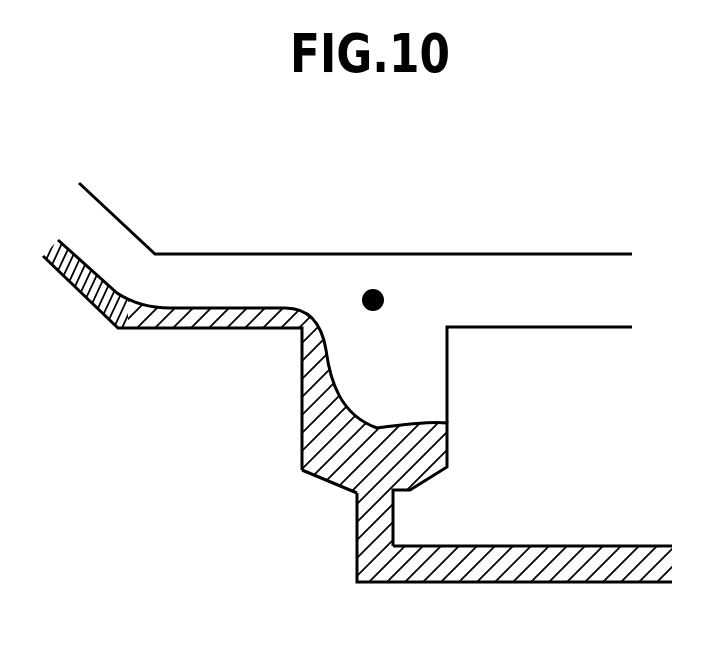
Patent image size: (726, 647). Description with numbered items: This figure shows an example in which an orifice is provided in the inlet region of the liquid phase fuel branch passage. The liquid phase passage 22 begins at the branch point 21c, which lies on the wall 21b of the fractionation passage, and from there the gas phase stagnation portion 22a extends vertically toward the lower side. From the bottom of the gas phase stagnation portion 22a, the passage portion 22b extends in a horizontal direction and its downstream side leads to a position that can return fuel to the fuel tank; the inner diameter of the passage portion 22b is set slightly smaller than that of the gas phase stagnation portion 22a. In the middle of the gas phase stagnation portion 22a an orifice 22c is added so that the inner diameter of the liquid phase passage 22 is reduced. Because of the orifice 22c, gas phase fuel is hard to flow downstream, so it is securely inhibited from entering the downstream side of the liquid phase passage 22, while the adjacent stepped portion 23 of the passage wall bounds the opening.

The inner wall surface of casing 21b is at (248, 275).
The branch point 21c is at (384, 300).
The liquid phase passage 22 is at (363, 418).
The gas phase stagnation portion 22a is at (373, 382).
The passage portion 22b is at (552, 568).
The orifice 22c is at (350, 485).
The stepped portion of casing 23 is at (533, 295).